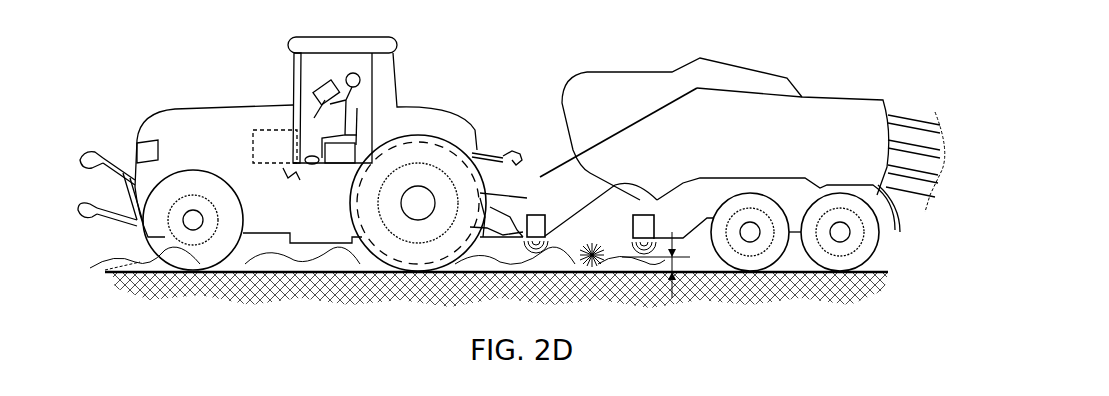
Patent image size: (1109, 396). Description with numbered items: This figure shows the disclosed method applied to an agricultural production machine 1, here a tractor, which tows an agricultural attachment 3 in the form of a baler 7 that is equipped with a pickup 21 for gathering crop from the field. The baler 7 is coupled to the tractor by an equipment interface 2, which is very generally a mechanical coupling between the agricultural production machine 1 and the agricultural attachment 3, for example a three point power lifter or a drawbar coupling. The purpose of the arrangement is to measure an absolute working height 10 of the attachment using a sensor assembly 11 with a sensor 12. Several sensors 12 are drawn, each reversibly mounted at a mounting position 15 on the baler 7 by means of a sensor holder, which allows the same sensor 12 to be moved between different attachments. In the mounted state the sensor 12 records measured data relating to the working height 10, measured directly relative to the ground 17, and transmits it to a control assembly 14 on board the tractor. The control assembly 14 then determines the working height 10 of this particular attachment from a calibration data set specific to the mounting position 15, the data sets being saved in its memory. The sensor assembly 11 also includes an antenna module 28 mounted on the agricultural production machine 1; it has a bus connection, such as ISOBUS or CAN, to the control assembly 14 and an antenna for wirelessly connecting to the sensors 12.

The agricultural production machine 1 is at (225, 118).
The equipment interface 2 is at (493, 178).
The agricultural attachment 3 is at (742, 145).
The baler 7 is at (673, 87).
The working height 10 is at (685, 275).
The sensor assembly 11 is at (600, 217).
The sensor 12 is at (537, 208).
The control assembly 14 is at (270, 143).
The mounting position 15 is at (640, 197).
The ground 17 is at (803, 277).
The pickup 21 is at (608, 268).
The antenna module 28 is at (290, 176).